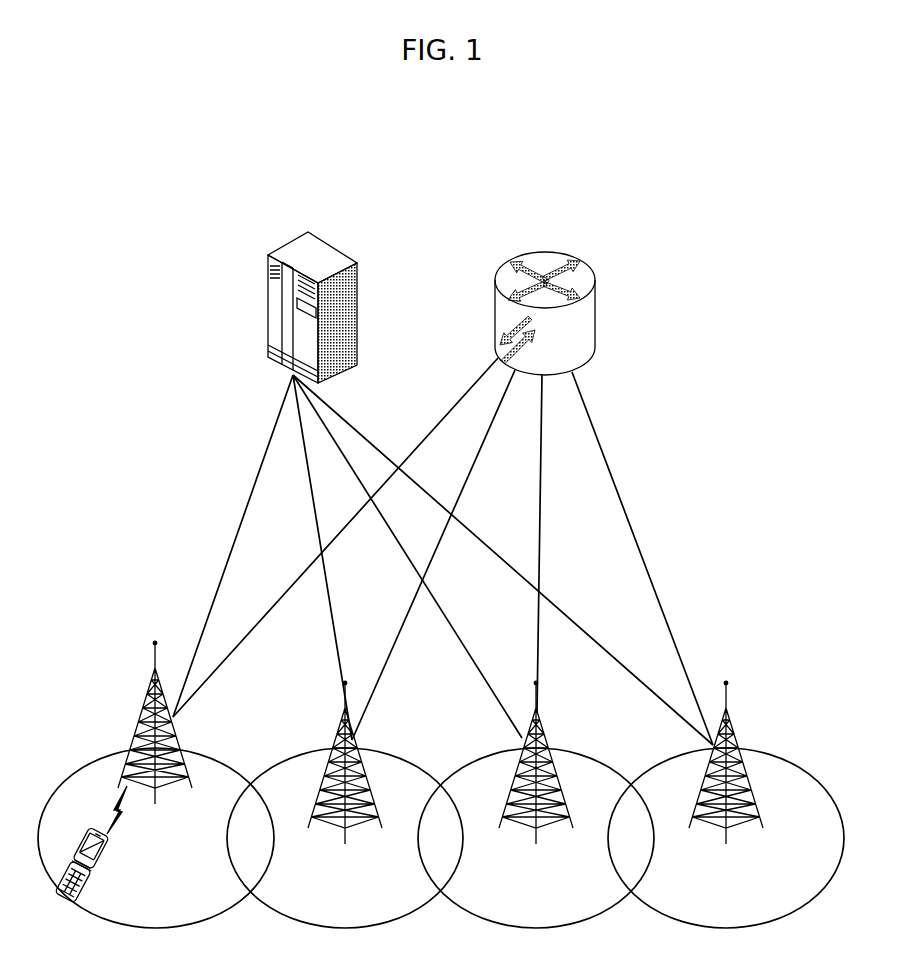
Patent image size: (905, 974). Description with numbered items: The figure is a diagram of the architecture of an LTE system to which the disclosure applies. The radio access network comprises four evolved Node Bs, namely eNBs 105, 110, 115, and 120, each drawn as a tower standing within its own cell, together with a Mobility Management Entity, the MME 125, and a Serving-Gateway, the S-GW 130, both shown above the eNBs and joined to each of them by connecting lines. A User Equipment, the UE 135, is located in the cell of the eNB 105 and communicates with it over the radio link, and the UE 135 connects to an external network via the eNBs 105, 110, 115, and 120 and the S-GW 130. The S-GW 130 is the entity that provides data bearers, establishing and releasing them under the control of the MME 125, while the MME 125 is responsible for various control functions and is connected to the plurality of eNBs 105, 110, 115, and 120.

The evolved Node B 105 is at (143, 703).
The evolved Node B 110 is at (338, 722).
The evolved Node B 115 is at (543, 725).
The evolved Node B 120 is at (738, 723).
The Mobility Management Entity 125 is at (298, 253).
The Serving-Gateway 130 is at (540, 260).
The User Equipment 135 is at (110, 858).